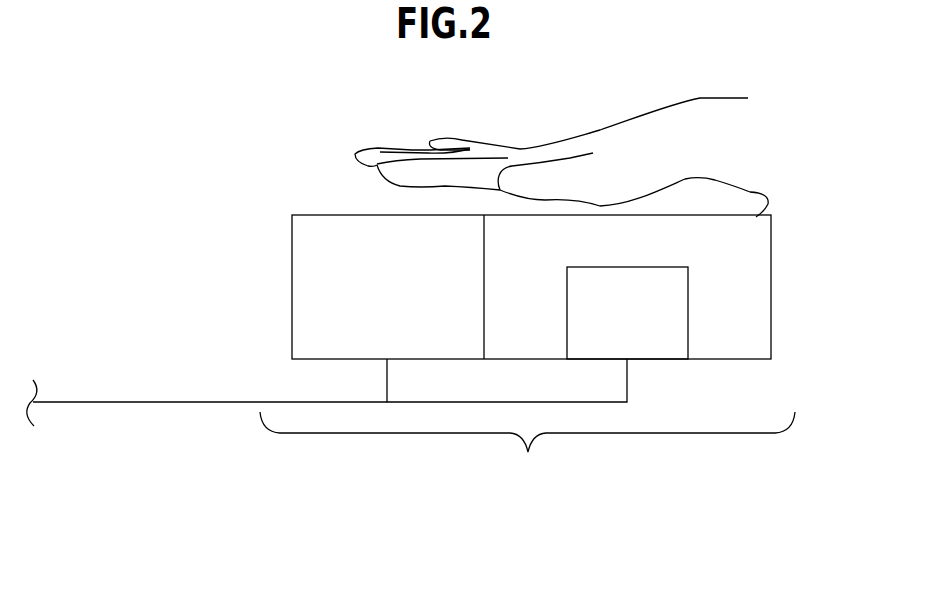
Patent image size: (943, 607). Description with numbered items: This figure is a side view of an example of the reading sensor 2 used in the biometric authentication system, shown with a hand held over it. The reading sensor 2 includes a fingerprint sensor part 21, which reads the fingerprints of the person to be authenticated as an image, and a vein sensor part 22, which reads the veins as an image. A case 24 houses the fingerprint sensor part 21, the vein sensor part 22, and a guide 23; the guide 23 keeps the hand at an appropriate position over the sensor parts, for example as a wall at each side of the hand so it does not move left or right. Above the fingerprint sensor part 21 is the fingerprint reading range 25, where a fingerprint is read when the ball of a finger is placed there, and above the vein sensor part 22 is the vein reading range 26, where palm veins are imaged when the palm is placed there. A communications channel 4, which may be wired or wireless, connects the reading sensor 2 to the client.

The reading sensor 2 is at (527, 424).
The communications channel 4 is at (103, 403).
The fingerprint sensor part 21 is at (322, 247).
The vein sensor part 22 is at (648, 347).
The guide 23 is at (771, 215).
The case 24 is at (733, 347).
The fingerprint reading range 25 is at (332, 214).
The vein reading range 26 is at (755, 214).